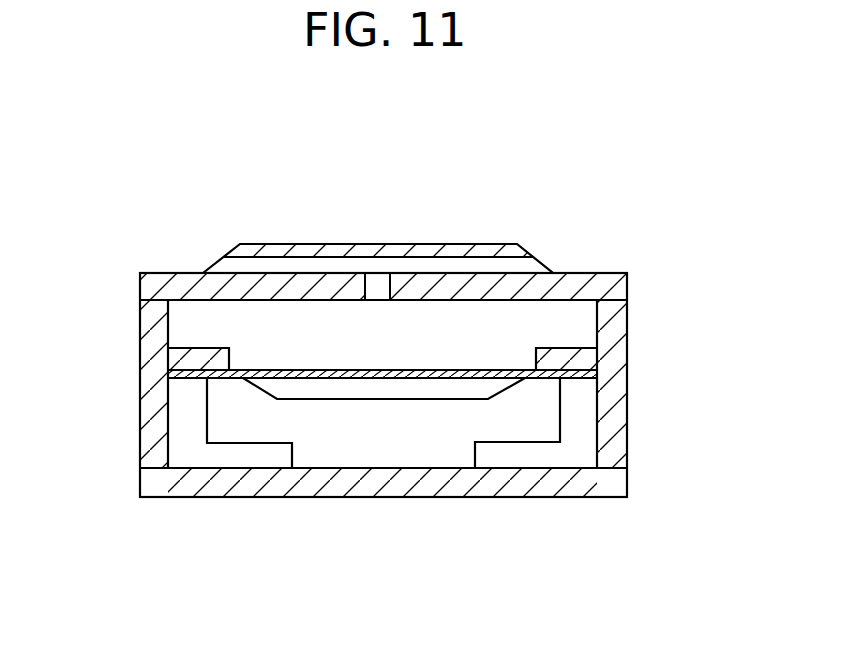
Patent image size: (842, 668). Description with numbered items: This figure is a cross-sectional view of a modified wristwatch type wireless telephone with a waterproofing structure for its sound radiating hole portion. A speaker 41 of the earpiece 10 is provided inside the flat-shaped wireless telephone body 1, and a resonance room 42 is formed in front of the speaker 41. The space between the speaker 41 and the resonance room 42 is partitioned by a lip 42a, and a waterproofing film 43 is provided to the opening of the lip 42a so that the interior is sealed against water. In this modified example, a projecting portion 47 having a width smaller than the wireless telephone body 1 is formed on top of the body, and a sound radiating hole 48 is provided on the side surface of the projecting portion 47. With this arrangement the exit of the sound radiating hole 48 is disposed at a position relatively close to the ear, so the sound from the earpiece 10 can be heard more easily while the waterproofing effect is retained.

The wireless telephone body 1 is at (617, 373).
The earpiece 10 is at (424, 389).
The speaker 41 is at (380, 455).
The resonance room 42 is at (260, 332).
The lip 42a is at (205, 352).
The waterproofing film 43 is at (432, 372).
The projecting portion 47 is at (392, 246).
The sound radiating hole 48 is at (297, 272).